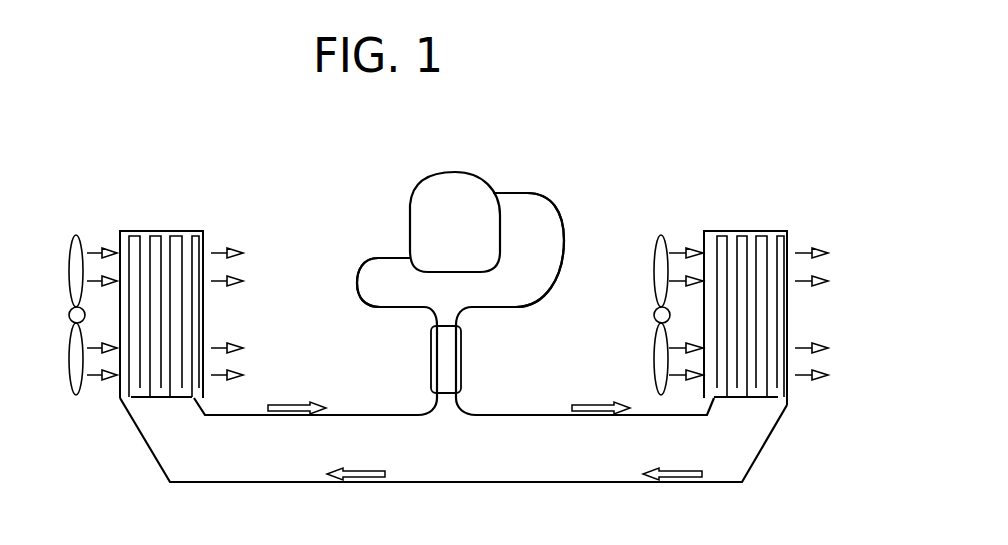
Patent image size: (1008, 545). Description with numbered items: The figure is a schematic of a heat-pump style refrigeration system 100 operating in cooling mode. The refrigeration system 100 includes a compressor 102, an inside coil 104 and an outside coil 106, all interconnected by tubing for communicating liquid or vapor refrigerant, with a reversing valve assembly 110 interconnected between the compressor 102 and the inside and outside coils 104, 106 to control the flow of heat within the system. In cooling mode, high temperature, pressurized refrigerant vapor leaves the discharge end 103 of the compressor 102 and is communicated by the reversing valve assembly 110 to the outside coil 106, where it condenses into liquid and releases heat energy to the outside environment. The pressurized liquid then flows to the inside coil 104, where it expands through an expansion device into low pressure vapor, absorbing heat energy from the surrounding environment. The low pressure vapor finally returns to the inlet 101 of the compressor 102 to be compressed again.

The refrigeration system 100 is at (160, 132).
The inlet 101 is at (390, 257).
The compressor 102 is at (461, 171).
The discharge end 103 is at (513, 192).
The inside coil 104 is at (121, 393).
The outside coil 106 is at (790, 390).
The reversing valve assembly 110 is at (463, 362).